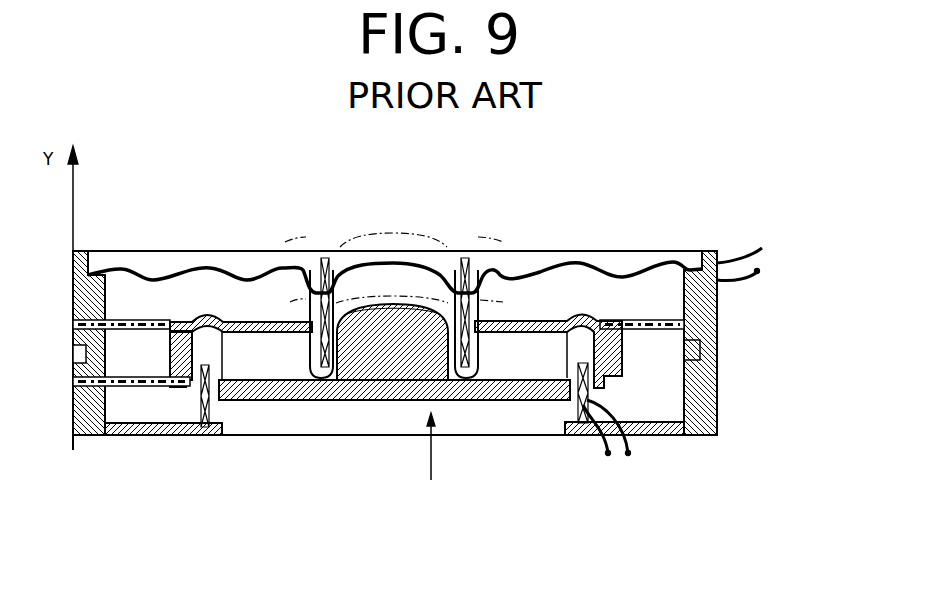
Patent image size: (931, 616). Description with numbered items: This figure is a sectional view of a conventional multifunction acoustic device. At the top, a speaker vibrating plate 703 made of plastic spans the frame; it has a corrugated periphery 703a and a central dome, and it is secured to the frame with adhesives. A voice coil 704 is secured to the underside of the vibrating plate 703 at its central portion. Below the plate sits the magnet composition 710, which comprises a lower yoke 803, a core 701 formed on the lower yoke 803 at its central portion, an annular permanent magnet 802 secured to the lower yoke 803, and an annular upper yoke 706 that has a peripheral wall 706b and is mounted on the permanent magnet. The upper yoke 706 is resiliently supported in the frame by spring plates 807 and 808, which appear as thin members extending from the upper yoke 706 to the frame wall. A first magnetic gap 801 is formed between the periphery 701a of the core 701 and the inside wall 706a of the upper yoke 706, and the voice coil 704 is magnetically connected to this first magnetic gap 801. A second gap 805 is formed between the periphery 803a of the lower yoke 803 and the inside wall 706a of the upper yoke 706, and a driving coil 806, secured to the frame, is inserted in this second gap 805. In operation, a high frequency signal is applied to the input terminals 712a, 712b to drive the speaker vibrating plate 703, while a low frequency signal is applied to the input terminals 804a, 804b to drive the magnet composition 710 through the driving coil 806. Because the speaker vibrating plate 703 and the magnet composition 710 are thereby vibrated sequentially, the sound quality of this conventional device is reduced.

The core 701 is at (421, 320).
The periphery of the core 701a is at (441, 262).
The speaker vibrating plate 703 is at (392, 260).
The corrugated periphery 703a is at (608, 270).
The voice coil 704 is at (302, 257).
The annular upper yoke 706 is at (226, 321).
The inside wall of the upper yoke 706a is at (92, 436).
The peripheral wall 706b is at (189, 316).
The magnet composition 710 is at (438, 460).
The input terminal 712a is at (762, 248).
The input terminal 712b is at (757, 271).
The first magnetic gap 801 is at (325, 260).
The annular permanent magnet 802 is at (260, 350).
The lower yoke 803 is at (303, 401).
The periphery of the lower yoke 803a is at (280, 388).
The input terminal 804a is at (628, 453).
The input terminal 804b is at (608, 453).
The second gap 805 is at (230, 436).
The driving coil 806 is at (205, 436).
The spring plate 807 is at (142, 319).
The spring plate 808 is at (73, 448).